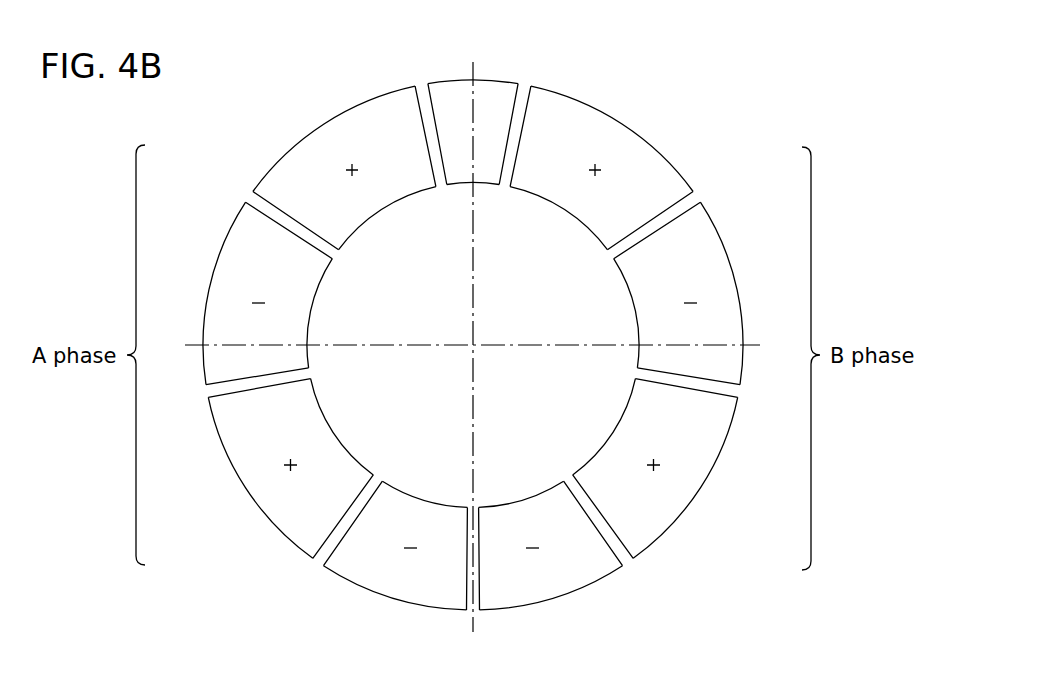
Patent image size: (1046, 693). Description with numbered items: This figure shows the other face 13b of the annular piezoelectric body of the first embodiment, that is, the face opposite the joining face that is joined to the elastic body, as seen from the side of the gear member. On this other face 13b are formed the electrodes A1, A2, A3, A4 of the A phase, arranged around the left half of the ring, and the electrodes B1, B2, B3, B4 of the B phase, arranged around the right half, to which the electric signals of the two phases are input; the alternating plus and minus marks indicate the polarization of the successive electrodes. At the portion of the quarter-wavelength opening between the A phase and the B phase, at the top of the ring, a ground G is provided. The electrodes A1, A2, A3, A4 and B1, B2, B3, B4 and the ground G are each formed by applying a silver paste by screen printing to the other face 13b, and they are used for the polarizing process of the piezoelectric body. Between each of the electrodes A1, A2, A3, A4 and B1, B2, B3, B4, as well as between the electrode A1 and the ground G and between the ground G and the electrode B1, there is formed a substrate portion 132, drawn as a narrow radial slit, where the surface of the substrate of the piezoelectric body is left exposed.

The other face 13b is at (474, 320).
The substrate portion 132 is at (527, 93).
The ground G is at (496, 97).
The electrode A1 is at (290, 178).
The electrode A2 is at (241, 265).
The electrode A3 is at (248, 455).
The electrode A4 is at (360, 574).
The electrode B1 is at (665, 176).
The electrode B2 is at (718, 277).
The electrode B3 is at (710, 440).
The electrode B4 is at (590, 568).